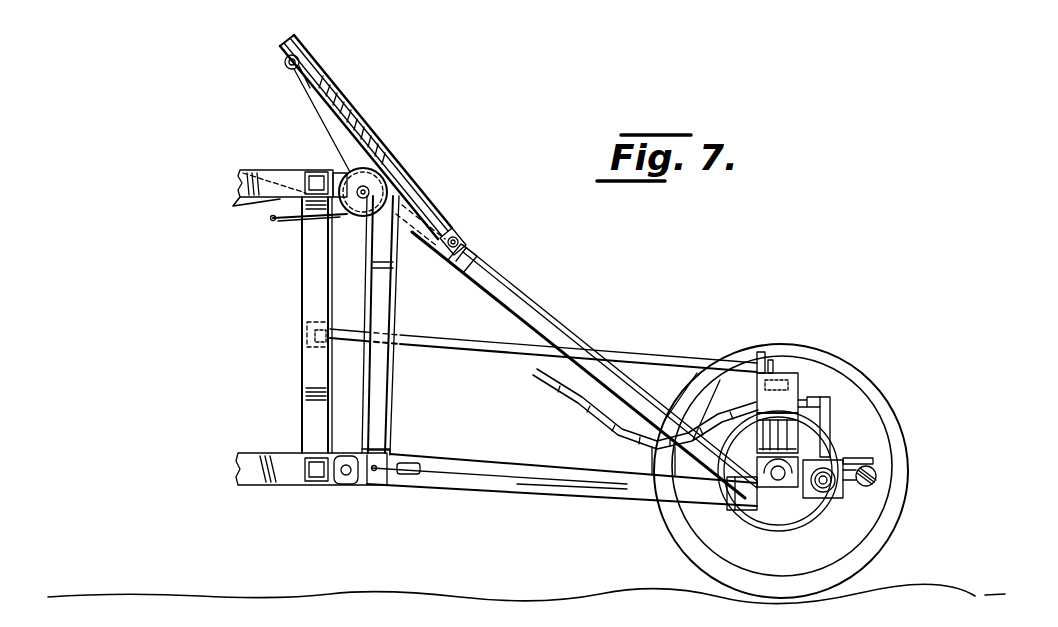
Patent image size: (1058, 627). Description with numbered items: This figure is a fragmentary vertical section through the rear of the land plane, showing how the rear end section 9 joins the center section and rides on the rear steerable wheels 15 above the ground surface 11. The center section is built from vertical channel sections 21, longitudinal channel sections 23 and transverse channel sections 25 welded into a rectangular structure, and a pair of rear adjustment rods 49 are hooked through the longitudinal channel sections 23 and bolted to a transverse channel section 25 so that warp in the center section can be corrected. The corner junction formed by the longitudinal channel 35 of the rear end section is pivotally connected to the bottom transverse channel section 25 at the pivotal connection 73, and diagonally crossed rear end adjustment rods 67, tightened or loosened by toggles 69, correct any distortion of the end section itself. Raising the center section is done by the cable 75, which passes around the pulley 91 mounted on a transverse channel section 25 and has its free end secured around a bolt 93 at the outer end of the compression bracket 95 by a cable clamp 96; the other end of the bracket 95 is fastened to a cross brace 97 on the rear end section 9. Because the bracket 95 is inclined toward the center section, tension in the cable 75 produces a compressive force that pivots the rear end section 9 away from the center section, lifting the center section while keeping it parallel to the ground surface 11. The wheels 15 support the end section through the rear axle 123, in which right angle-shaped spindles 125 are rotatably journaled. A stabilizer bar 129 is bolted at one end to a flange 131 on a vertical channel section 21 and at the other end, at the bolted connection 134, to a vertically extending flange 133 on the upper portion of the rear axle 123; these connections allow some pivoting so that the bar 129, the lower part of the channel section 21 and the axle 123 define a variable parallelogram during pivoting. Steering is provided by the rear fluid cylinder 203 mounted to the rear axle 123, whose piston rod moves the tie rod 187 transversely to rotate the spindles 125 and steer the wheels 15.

The rear end section 9 is at (510, 278).
The ground surface 11 is at (230, 593).
The rear steerable wheels 15 is at (768, 346).
The vertical channel section 21 is at (320, 249).
The longitudinal channel section 23 is at (270, 198).
The transverse channel section 25 is at (310, 173).
The longitudinal channel 35 is at (484, 288).
The rear adjustment rod 49 is at (235, 203).
The rear end adjustment rod 67 is at (443, 478).
The toggle 69 is at (410, 462).
The pivotal connection 73 is at (353, 502).
The cable 75 is at (274, 222).
The pulley 91 is at (347, 170).
The bolt 93 is at (285, 64).
The compression bracket 95 is at (365, 118).
The cable clamp 96 is at (298, 91).
The cross brace 97 is at (457, 270).
The rear axle 123 is at (757, 430).
The right angle-shaped spindle 125 is at (808, 382).
The stabilizer bar 129 is at (613, 350).
The flange 131 is at (326, 314).
The vertically extending flange 133 is at (758, 355).
The bolted connection 134 is at (771, 360).
The tie rod 187 is at (871, 483).
The rear fluid cylinder 203 is at (818, 498).